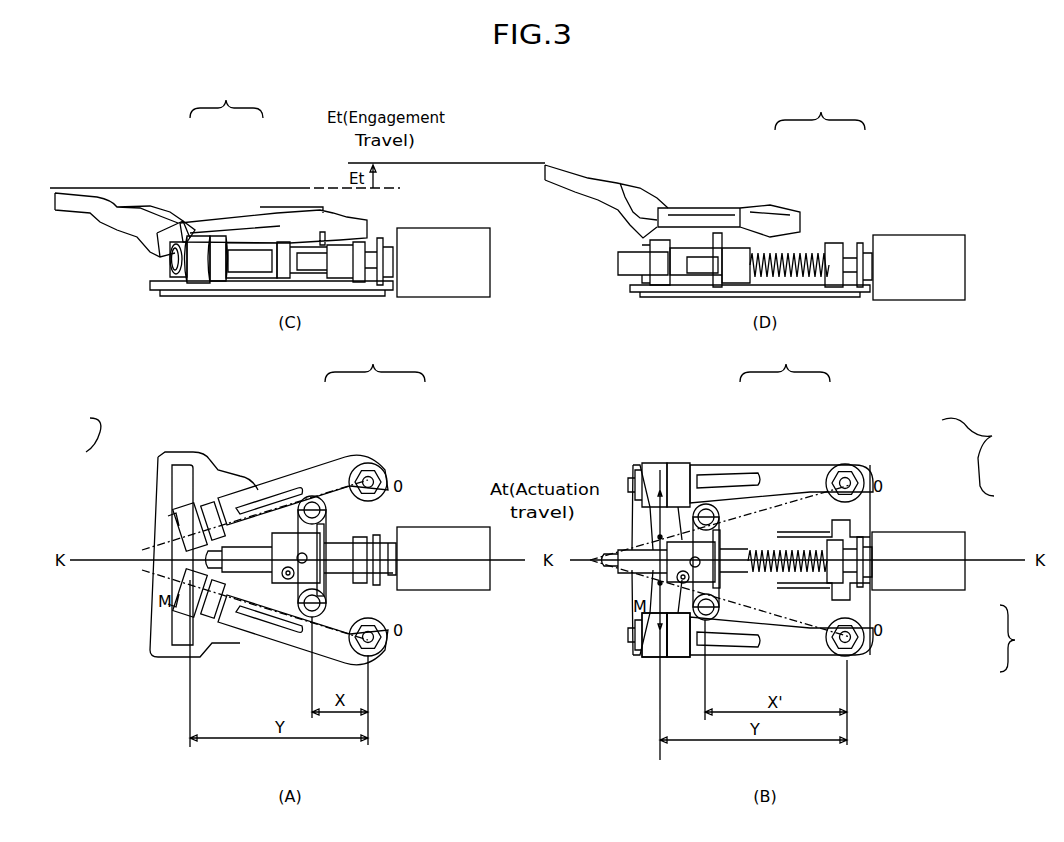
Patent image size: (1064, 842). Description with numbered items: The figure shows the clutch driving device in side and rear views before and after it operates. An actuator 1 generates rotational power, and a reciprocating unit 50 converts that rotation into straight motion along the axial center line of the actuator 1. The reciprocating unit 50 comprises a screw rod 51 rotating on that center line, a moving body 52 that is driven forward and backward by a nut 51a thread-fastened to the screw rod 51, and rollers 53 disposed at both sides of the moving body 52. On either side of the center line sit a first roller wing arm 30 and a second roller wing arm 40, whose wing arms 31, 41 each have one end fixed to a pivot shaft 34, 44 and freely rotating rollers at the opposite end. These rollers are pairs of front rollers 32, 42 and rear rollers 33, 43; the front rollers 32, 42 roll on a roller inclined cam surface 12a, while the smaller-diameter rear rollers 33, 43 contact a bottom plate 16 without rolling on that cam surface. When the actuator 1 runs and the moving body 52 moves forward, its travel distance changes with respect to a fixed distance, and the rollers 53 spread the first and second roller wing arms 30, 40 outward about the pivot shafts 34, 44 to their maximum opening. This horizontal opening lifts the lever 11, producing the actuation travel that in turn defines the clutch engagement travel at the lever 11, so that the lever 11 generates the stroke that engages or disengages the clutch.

The actuator 1 is at (470, 247).
The lever 11 is at (93, 193).
The roller inclined cam surface 12a is at (183, 226).
The bottom plate 16 is at (177, 277).
The first roller wing arm 30 is at (447, 266).
The wing arm 31 is at (247, 253).
The front roller 32 is at (197, 248).
The rear roller 33 is at (215, 247).
The pivot shaft 34 is at (845, 483).
The second roller wing arm 40 is at (290, 625).
The wing arm 41 is at (870, 606).
The front roller 42 is at (655, 640).
The rear roller 43 is at (680, 650).
The pivot shaft 44 is at (372, 640).
The reciprocating unit 50 is at (370, 268).
The screw rod 51 is at (830, 250).
The nut 51a is at (760, 258).
The moving body 52 is at (675, 260).
The rollers 53 is at (318, 600).